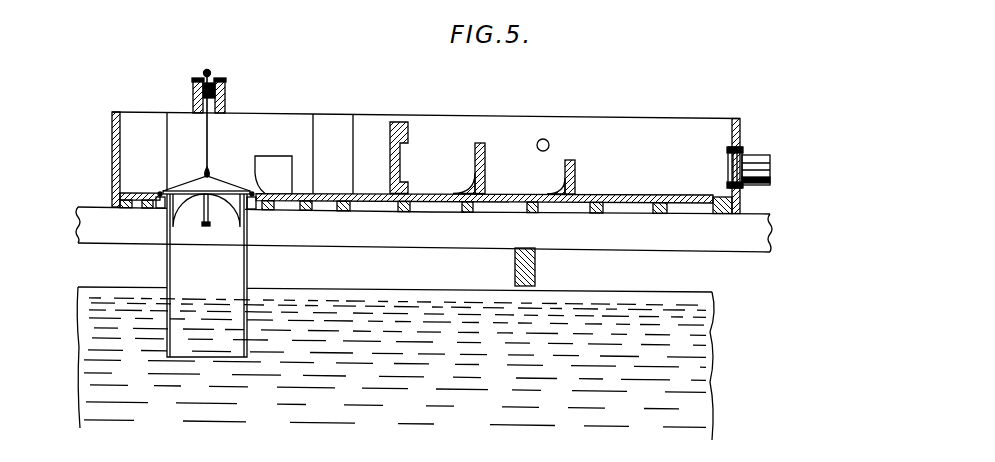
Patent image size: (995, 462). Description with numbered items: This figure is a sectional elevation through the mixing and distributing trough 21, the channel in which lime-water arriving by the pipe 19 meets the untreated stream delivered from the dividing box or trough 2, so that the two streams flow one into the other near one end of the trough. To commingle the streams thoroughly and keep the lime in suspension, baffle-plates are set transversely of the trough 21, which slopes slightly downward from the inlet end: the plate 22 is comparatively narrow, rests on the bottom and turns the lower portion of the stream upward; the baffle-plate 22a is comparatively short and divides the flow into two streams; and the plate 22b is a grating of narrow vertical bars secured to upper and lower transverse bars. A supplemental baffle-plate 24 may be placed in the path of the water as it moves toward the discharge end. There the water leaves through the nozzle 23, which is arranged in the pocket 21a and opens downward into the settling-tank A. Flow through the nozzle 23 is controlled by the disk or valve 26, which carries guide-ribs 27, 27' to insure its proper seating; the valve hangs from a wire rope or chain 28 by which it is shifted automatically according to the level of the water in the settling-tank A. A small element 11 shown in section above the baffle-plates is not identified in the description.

The dividing box or trough 2 is at (426, 150).
The mixing trough 21 is at (440, 111).
The pocket 21a is at (263, 114).
The disk or valve 26 is at (228, 174).
The wire rope or chain 28 is at (208, 138).
The supplemental baffle-plate 24 is at (278, 153).
The baffle-plate 22b is at (390, 153).
The baffle-plate 22a is at (486, 167).
The baffle-plate 22 is at (577, 165).
The shaft 11 is at (547, 140).
The pipe 19 is at (755, 149).
The guide-rib 27 is at (189, 220).
The guide-rib 27' is at (223, 220).
The nozzle 23 is at (240, 272).
The settling-tank A is at (395, 363).